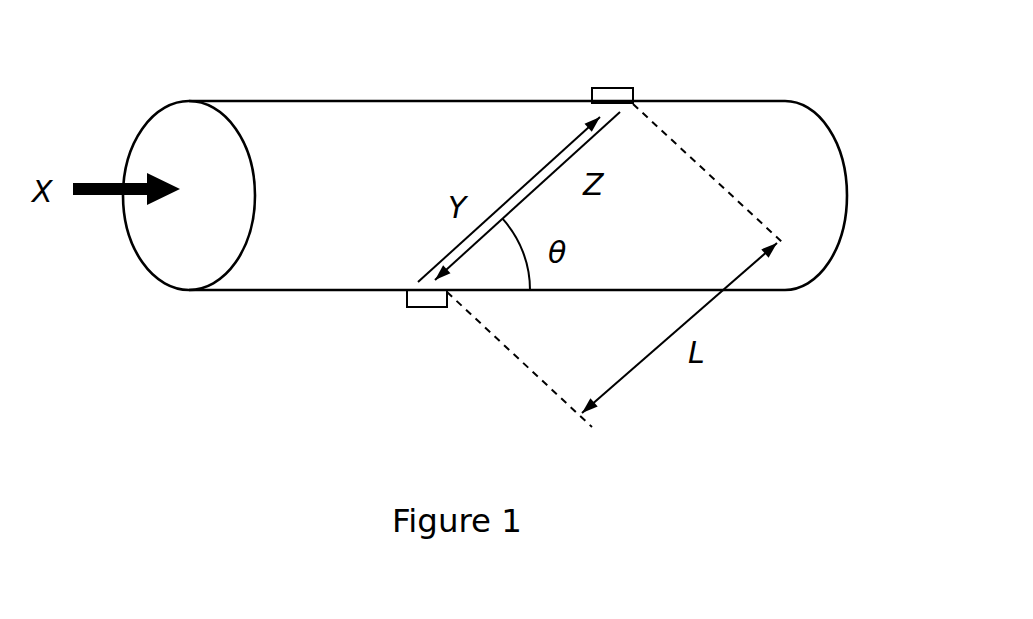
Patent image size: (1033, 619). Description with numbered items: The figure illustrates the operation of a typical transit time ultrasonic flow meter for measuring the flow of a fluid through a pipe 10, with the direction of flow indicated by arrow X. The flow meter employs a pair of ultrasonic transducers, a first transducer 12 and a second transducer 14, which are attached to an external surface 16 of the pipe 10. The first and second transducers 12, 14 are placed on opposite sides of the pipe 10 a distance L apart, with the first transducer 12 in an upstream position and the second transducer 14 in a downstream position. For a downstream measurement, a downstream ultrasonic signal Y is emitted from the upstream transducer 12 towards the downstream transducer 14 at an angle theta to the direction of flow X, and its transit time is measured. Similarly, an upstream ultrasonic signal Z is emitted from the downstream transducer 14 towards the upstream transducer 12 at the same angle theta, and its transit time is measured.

The pipe 10 is at (827, 130).
The first transducer 12 is at (432, 307).
The second transducer 14 is at (605, 88).
The external surface 16 is at (437, 101).